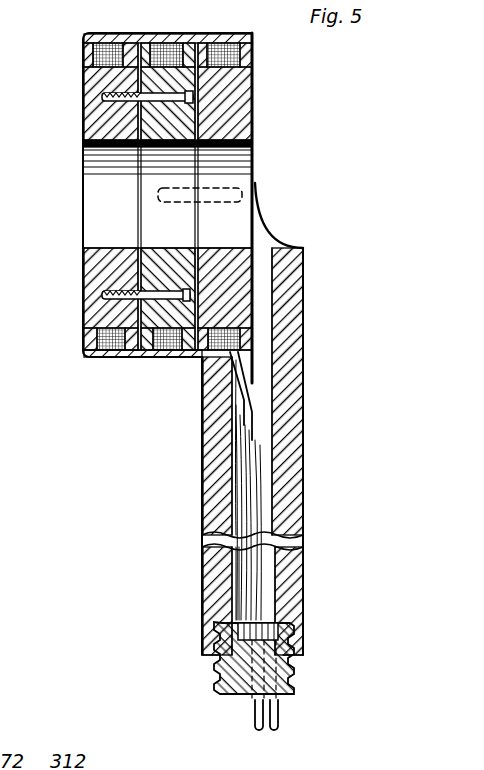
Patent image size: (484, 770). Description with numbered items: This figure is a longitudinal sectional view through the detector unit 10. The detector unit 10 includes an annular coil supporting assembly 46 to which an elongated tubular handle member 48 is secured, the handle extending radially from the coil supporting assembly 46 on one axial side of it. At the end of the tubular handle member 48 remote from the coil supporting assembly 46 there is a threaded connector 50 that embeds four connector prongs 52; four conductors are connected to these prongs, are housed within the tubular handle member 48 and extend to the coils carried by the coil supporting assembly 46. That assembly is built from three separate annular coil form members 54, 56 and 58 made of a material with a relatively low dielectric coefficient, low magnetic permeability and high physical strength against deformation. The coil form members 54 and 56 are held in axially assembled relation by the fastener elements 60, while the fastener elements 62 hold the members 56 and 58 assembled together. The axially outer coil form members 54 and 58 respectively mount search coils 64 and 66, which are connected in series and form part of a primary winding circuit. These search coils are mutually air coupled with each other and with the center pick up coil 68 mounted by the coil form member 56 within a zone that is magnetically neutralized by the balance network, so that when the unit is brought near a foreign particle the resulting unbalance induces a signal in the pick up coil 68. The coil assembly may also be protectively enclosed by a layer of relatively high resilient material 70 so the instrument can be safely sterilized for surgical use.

The detector unit 10 is at (70, 56).
The annular coil supporting assembly 46 is at (255, 71).
The elongated tubular handle member 48 is at (304, 360).
The threaded connector 50 is at (228, 667).
The connector prongs 52 is at (280, 712).
The annular coil form member 54 is at (100, 126).
The annular coil form member 56 is at (167, 166).
The annular coil form member 58 is at (228, 113).
The fastener elements 60 is at (160, 292).
The fastener elements 62 is at (243, 190).
The search coil 64 is at (116, 43).
The search coil 66 is at (222, 40).
The center pick up coil 68 is at (155, 358).
The layer of relatively high resilient material 70 is at (180, 38).